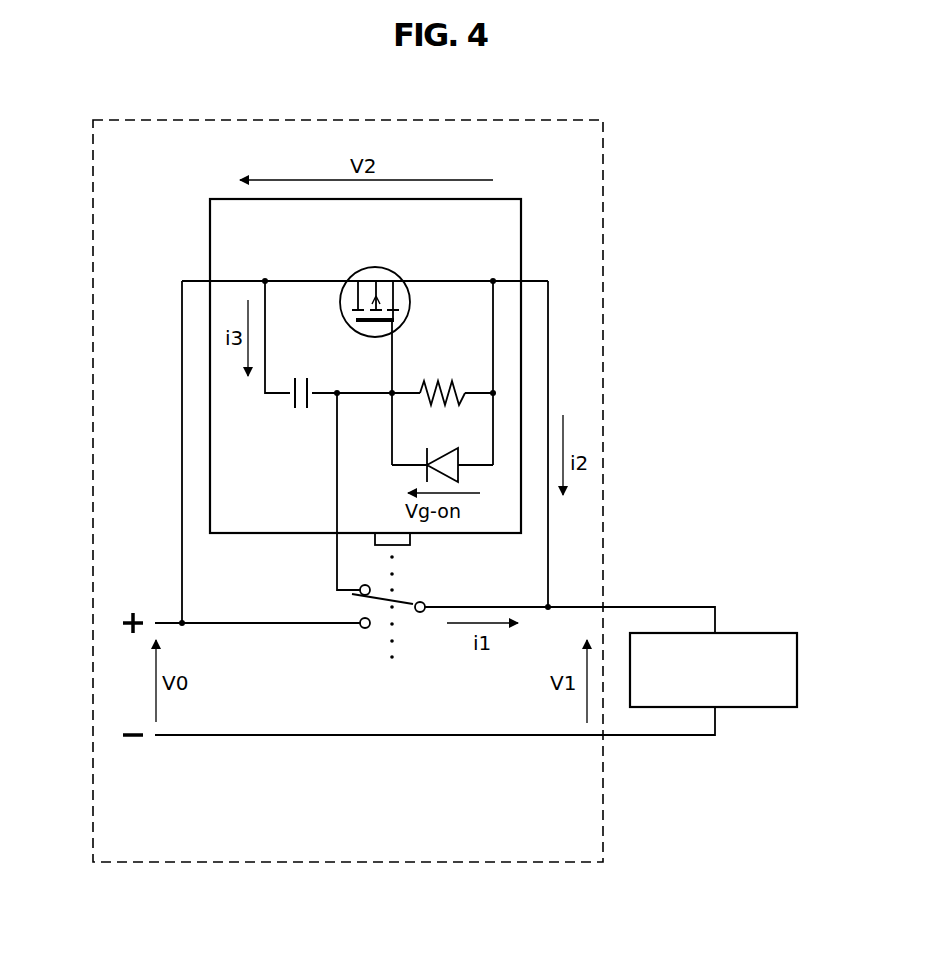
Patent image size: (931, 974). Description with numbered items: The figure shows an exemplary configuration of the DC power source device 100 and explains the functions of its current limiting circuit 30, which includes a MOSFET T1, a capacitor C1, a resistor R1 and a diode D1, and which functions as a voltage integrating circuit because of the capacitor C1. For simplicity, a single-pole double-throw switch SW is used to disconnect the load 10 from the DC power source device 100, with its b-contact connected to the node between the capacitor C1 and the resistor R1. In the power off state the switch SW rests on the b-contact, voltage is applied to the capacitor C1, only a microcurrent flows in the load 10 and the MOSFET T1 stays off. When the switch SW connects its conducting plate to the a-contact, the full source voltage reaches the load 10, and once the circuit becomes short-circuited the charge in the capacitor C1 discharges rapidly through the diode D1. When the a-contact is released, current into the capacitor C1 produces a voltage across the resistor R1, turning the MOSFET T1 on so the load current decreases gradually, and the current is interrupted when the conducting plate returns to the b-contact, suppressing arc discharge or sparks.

The DC power source device 100 is at (490, 119).
The current limiting circuit 30 is at (522, 238).
The load 10 is at (766, 632).
The MOSFET T1 is at (398, 271).
The capacitor C1 is at (298, 409).
The resistor R1 is at (442, 382).
The diode D1 is at (442, 453).
The single-pole double-throw switch SW is at (412, 640).